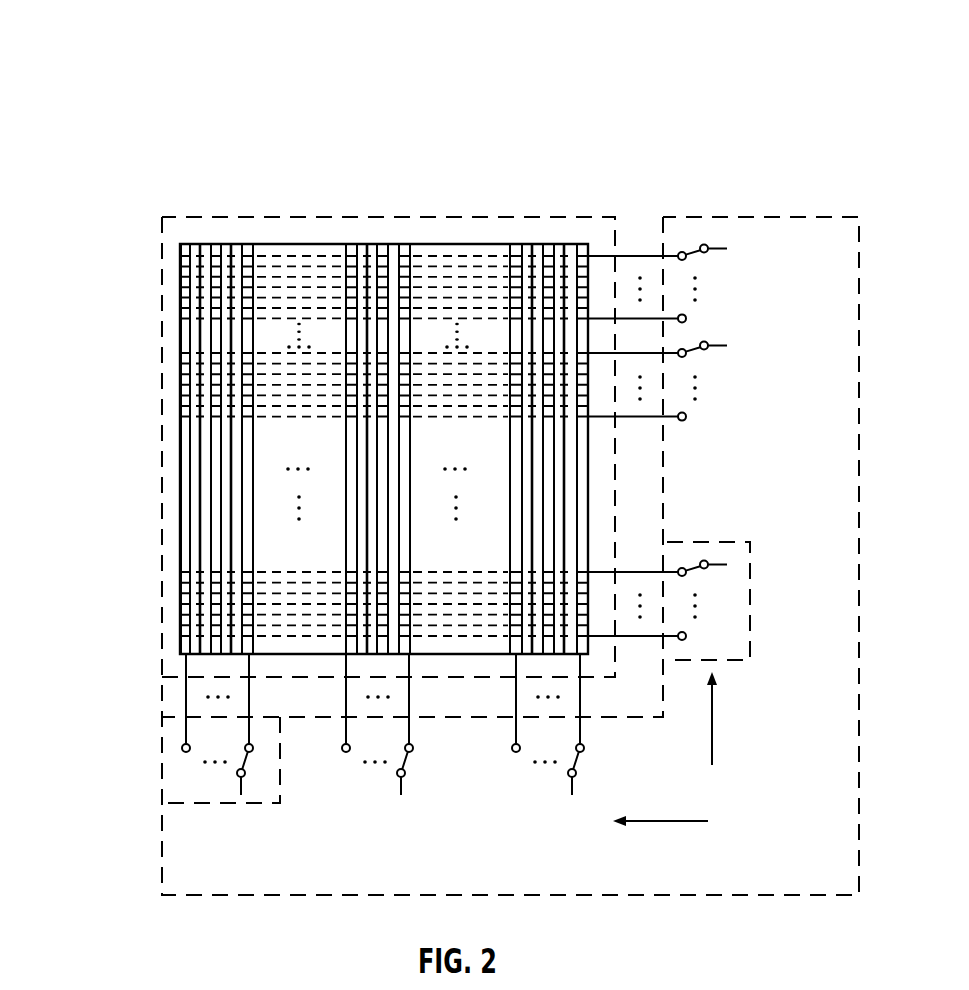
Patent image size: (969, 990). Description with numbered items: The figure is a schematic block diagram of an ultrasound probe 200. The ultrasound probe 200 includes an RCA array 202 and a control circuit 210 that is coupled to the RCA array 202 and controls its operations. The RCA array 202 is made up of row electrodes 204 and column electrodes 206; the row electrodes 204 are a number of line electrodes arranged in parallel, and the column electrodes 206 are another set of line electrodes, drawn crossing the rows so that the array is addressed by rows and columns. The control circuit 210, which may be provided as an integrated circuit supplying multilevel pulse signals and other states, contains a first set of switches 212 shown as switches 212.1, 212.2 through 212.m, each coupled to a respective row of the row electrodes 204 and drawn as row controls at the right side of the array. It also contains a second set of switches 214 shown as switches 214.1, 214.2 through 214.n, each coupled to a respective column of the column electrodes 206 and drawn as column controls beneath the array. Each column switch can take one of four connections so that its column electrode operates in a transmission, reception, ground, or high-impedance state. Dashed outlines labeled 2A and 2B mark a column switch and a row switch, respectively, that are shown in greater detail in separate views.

The ultrasound probe 200 is at (805, 52).
The RCA array 202 is at (217, 215).
The row electrodes 204 is at (263, 243).
The column electrodes 206 is at (170, 492).
The control circuit 210 is at (861, 263).
The first set of switches 212 is at (726, 836).
The switch of the first set of switches 212.1 is at (725, 285).
The switch of the first set of switches 212.2 is at (725, 380).
The switch of the first set of switches 212.m is at (728, 602).
The second set of switches 214 is at (775, 726).
The switch of the second set of switches 214.1 is at (216, 797).
The switch of the second set of switches 214.2 is at (384, 797).
The switch of the second set of switches 214.n is at (548, 797).
The detail region of FIG. 2A is at (280, 793).
The detail region of FIG. 2B is at (722, 542).